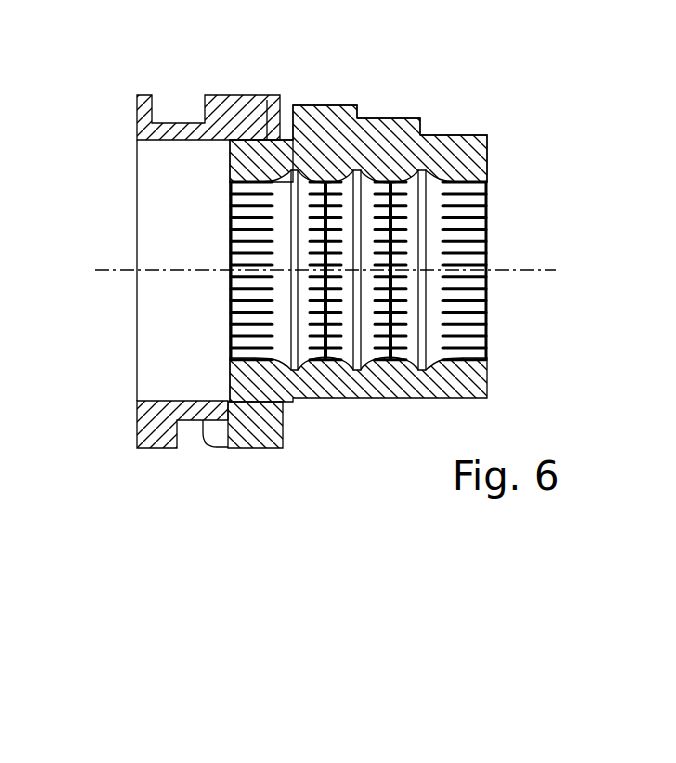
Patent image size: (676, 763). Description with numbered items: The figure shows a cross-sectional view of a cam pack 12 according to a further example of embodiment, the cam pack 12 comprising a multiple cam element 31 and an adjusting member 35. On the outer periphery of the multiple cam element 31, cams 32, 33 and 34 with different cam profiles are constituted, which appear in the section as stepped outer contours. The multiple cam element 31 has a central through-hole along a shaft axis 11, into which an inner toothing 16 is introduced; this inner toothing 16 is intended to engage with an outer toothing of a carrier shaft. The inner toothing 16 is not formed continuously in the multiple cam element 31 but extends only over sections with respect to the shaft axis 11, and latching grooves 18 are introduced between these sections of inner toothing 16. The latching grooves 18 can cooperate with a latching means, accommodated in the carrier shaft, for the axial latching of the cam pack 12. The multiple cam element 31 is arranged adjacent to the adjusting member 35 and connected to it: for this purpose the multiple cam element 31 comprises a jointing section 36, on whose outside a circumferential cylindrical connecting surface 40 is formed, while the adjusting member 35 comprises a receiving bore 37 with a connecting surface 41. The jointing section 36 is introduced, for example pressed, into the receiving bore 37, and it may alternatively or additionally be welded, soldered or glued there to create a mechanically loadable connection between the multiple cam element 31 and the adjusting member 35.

The shaft axis 11 is at (103, 266).
The cam pack 12 is at (104, 72).
The inner toothing 16 is at (489, 334).
The latching grooves 18 is at (330, 204).
The multiple cam element 31 is at (478, 165).
The cam 32 is at (331, 105).
The cam 33 is at (401, 118).
The cam 34 is at (462, 134).
The adjusting member 35 is at (228, 106).
The jointing section 36 is at (258, 382).
The receiving bore 37 is at (180, 399).
The connecting surface 40 is at (267, 140).
The connecting surface 41 is at (258, 148).